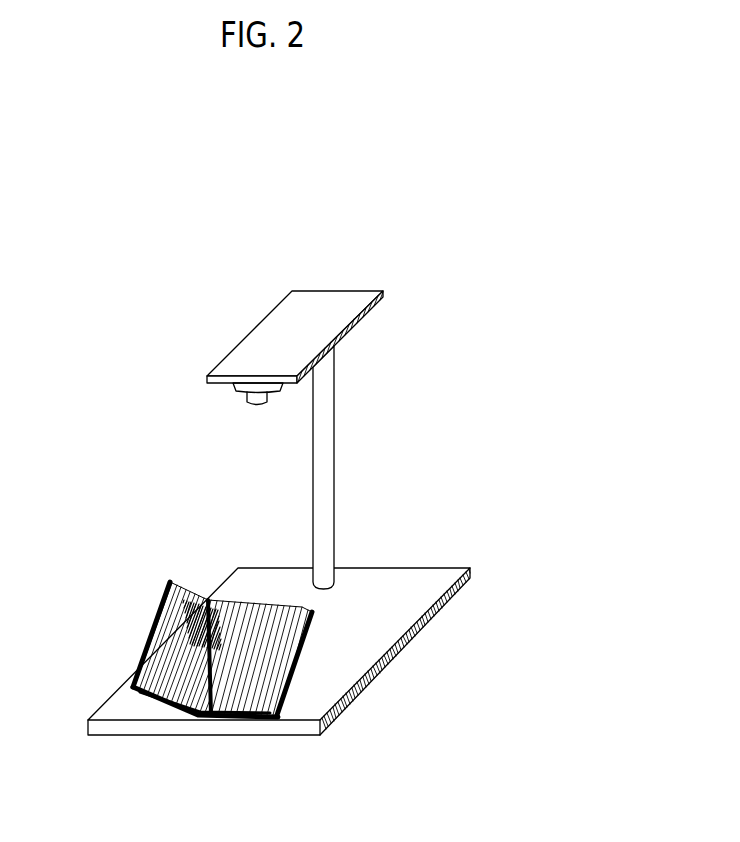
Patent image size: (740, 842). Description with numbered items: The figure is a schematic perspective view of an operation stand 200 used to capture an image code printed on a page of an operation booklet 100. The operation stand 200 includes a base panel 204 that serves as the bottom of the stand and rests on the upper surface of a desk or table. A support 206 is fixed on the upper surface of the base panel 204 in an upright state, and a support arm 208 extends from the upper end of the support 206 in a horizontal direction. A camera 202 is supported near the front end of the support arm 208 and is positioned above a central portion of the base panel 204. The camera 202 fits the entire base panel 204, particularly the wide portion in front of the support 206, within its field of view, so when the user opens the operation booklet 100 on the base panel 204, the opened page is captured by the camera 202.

The operation booklet 100 is at (180, 653).
The operation stand 200 is at (412, 432).
The camera 202 is at (226, 404).
The base panel 204 is at (387, 598).
The support 206 is at (322, 467).
The support arm 208 is at (300, 303).